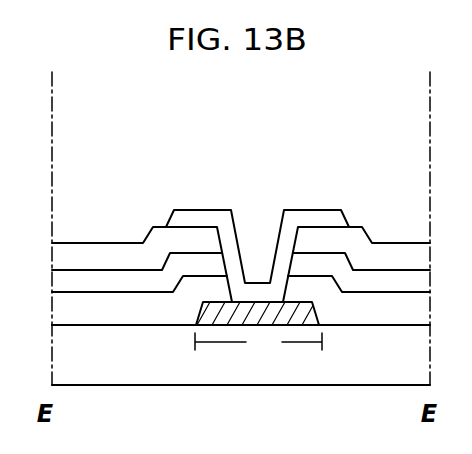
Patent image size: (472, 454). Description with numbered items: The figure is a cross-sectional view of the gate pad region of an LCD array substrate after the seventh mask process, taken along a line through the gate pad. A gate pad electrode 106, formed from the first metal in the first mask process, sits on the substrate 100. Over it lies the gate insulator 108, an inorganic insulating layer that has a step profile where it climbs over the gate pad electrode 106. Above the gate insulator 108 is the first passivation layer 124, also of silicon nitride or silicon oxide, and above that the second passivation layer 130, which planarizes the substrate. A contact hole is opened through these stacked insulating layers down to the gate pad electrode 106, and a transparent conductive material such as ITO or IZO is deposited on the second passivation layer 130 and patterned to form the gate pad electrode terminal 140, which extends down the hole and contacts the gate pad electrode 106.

The substrate 100 is at (357, 365).
The gate pad electrode 106 is at (297, 327).
The gate insulator 108 is at (103, 283).
The first passivation layer 124 is at (381, 261).
The second passivation layer 130 is at (200, 214).
The gate pad electrode terminal 140 is at (308, 210).